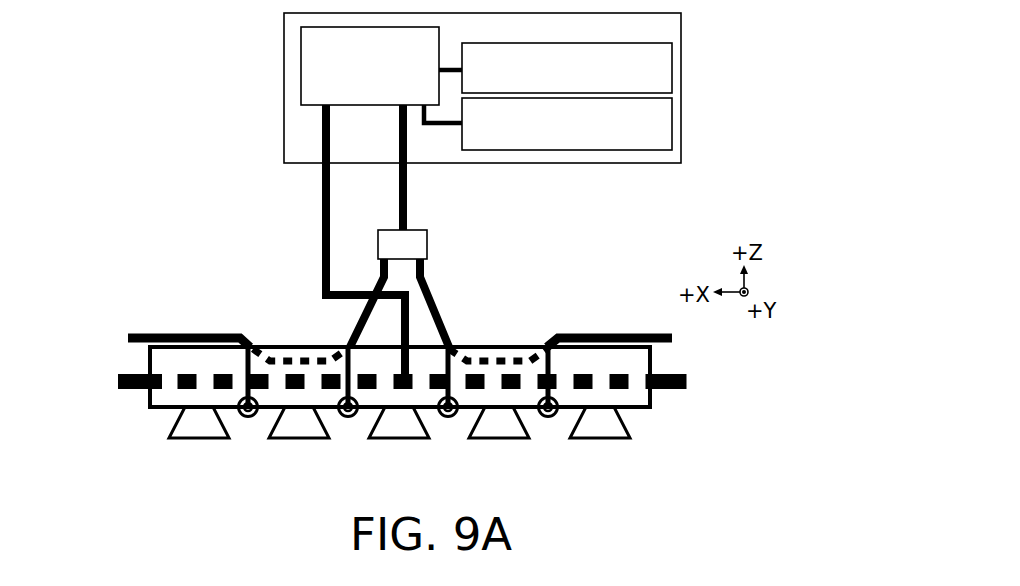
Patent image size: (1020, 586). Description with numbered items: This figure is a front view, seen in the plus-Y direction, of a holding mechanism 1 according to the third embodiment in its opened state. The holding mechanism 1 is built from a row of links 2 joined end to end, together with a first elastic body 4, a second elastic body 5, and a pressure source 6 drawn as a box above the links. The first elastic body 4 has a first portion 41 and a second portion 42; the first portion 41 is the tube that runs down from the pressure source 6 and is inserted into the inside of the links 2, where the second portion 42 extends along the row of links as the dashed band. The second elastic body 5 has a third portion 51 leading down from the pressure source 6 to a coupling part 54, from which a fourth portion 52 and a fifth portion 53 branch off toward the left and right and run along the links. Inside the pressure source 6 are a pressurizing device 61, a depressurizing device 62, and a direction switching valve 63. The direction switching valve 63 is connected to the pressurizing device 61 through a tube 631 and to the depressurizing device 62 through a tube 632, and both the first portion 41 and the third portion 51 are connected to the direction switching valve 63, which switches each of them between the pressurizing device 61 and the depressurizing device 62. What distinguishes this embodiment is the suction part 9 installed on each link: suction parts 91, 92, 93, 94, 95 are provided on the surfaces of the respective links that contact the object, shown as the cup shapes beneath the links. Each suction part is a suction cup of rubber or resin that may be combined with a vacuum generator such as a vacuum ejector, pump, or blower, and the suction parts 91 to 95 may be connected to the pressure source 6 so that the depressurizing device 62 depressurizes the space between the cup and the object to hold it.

The holding mechanism 1 is at (748, 46).
The link 2 is at (388, 394).
The first elastic body 4 is at (308, 247).
The first portion 41 is at (322, 218).
The second portion 42 is at (622, 388).
The second elastic body 5 is at (400, 233).
The third portion 51 is at (408, 185).
The fourth portion 52 is at (352, 344).
The fifth portion 53 is at (574, 331).
The coupling part 54 is at (428, 250).
The pressure source 6 is at (284, 122).
The pressurizing device 61 is at (672, 63).
The depressurizing device 62 is at (672, 112).
The direction switching valve 63 is at (301, 68).
The tube 631 is at (444, 68).
The tube 632 is at (439, 127).
The suction part 9 is at (407, 456).
The suction part 91 is at (393, 431).
The suction part 92 is at (300, 430).
The suction part 93 is at (200, 430).
The suction part 94 is at (497, 430).
The suction part 95 is at (597, 430).